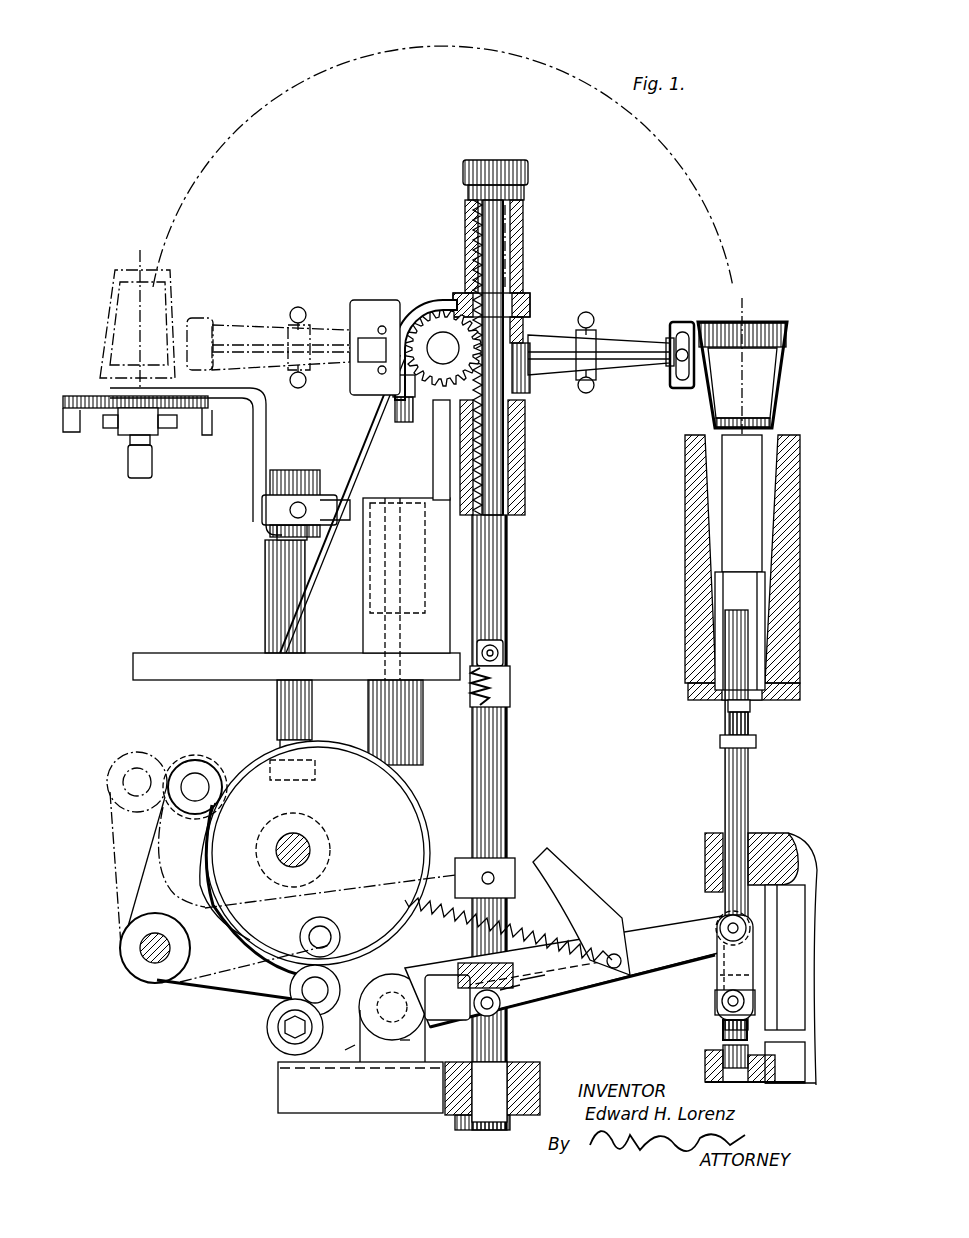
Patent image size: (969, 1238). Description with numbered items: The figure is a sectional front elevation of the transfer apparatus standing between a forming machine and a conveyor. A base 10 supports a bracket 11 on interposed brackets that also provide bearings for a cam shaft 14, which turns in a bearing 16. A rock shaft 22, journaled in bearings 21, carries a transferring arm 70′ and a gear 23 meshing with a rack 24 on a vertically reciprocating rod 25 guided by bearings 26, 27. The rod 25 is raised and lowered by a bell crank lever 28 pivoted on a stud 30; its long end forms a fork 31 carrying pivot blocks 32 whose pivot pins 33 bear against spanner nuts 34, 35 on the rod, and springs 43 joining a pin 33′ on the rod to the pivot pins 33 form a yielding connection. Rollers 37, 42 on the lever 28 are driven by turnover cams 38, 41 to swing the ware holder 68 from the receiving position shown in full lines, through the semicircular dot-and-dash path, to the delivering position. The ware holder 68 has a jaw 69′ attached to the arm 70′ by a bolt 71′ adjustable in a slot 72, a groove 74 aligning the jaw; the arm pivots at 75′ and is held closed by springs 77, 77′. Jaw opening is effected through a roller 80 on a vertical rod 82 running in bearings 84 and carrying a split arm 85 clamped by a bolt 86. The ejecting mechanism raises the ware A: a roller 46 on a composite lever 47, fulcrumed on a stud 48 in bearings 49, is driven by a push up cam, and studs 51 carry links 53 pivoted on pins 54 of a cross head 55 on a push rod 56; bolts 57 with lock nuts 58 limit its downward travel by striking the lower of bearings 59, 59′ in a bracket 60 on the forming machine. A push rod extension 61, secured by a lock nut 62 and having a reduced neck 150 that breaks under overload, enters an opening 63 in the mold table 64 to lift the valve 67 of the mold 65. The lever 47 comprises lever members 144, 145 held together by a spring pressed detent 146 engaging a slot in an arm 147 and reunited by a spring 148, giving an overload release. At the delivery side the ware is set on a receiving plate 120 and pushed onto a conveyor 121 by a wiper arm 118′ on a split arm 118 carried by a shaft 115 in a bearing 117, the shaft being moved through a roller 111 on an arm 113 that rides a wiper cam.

The base 10 is at (520, 1113).
The bracket 11 is at (133, 665).
The cam shaft 14 is at (305, 855).
The bearing 16 is at (325, 840).
The bearings 21 is at (393, 385).
The rock shaft 22 is at (443, 345).
The gear 23 is at (425, 330).
The rack 24 is at (490, 490).
The vertically reciprocating rod 25 is at (508, 555).
The bearing 26 is at (525, 470).
The bearing 27 is at (522, 1070).
The bell crank lever 28 is at (185, 985).
The stud 30 is at (145, 950).
The fork 31 is at (445, 1020).
The pivot blocks 32 is at (500, 1010).
The pivot pins 33 is at (497, 1013).
The pin 33′ is at (505, 650).
The spanner nut 34 is at (520, 995).
The spanner nut 35 is at (535, 978).
The roller 37 is at (208, 762).
The turnover cam 38 is at (255, 785).
The turnover cam 41 is at (240, 990).
The roller 42 is at (290, 993).
The springs 43 is at (505, 688).
The roller 46 is at (267, 1027).
The composite lever 47 is at (338, 1040).
The stud 48 is at (388, 1010).
The bearings 49 is at (405, 1045).
The studs 51 is at (722, 922).
The links 53 is at (717, 975).
The pins 54 is at (722, 1001).
The cross head 55 is at (715, 1005).
The push rod 56 is at (725, 767).
The bolts 57 is at (723, 1028).
The lock nuts 58 is at (730, 975).
The bearing 59 is at (705, 1065).
The bearing 59′ is at (705, 840).
The bracket 60 is at (795, 845).
The push rod extension 61 is at (750, 712).
The lock nut 62 is at (720, 741).
The openings 63 is at (695, 690).
The mold table 64 is at (780, 695).
The mold 65 is at (758, 600).
The bottom piece 67 is at (750, 505).
The ware holders 68 is at (760, 322).
The jaw 69′ is at (115, 310).
The transferring arm 70′ is at (625, 340).
The bolt 71′ is at (672, 335).
The slot 72 is at (684, 348).
The groove 74 is at (692, 325).
The pivot 75′ is at (385, 300).
The spring 77 is at (590, 314).
The spring 77′ is at (592, 392).
The roller 80 is at (280, 745).
The vertical rod 82 is at (277, 548).
The bearings 84 is at (265, 600).
The split arm 85 is at (310, 500).
The bolt 86 is at (298, 482).
The roller 111 is at (315, 780).
The arm 113 is at (400, 750).
The shaft 115 is at (405, 640).
The bearing 117 is at (375, 668).
The split arm 118 is at (375, 500).
The wiper arm 118′ is at (232, 400).
The receiving plate 120 is at (75, 396).
The conveyor 121 is at (110, 415).
The lever member 144 is at (580, 990).
The lever member 145 is at (650, 930).
The spring pressed detent 146 is at (590, 975).
The arm 147 is at (595, 895).
The spring 148 is at (522, 932).
The reduced neck 150 is at (728, 708).
The ware A is at (783, 345).